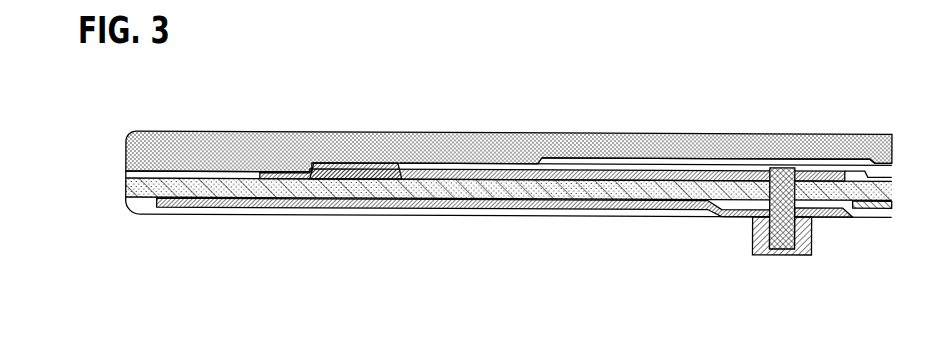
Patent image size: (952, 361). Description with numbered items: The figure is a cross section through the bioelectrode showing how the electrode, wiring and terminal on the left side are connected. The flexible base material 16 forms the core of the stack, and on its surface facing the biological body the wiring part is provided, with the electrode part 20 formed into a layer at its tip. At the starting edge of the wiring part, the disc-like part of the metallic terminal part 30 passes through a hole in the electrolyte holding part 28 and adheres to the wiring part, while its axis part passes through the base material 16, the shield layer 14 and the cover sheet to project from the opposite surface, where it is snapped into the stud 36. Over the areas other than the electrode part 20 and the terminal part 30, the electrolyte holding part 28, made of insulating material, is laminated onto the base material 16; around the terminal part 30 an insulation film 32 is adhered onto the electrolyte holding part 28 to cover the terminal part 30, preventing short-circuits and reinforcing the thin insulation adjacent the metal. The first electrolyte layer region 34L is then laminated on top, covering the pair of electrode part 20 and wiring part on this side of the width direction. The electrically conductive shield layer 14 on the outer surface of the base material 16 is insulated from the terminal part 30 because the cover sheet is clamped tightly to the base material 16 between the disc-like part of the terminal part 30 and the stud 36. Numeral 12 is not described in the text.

The substrate 12 is at (508, 217).
The shield layer 14 is at (338, 207).
The base material 16 is at (142, 190).
The electrode part 20 is at (345, 162).
The electrolyte holding part 28 is at (513, 165).
The terminal part 30 is at (787, 165).
The insulation film 32 is at (582, 158).
The first electrolyte layer region 34L is at (430, 148).
The stud 36 is at (775, 255).